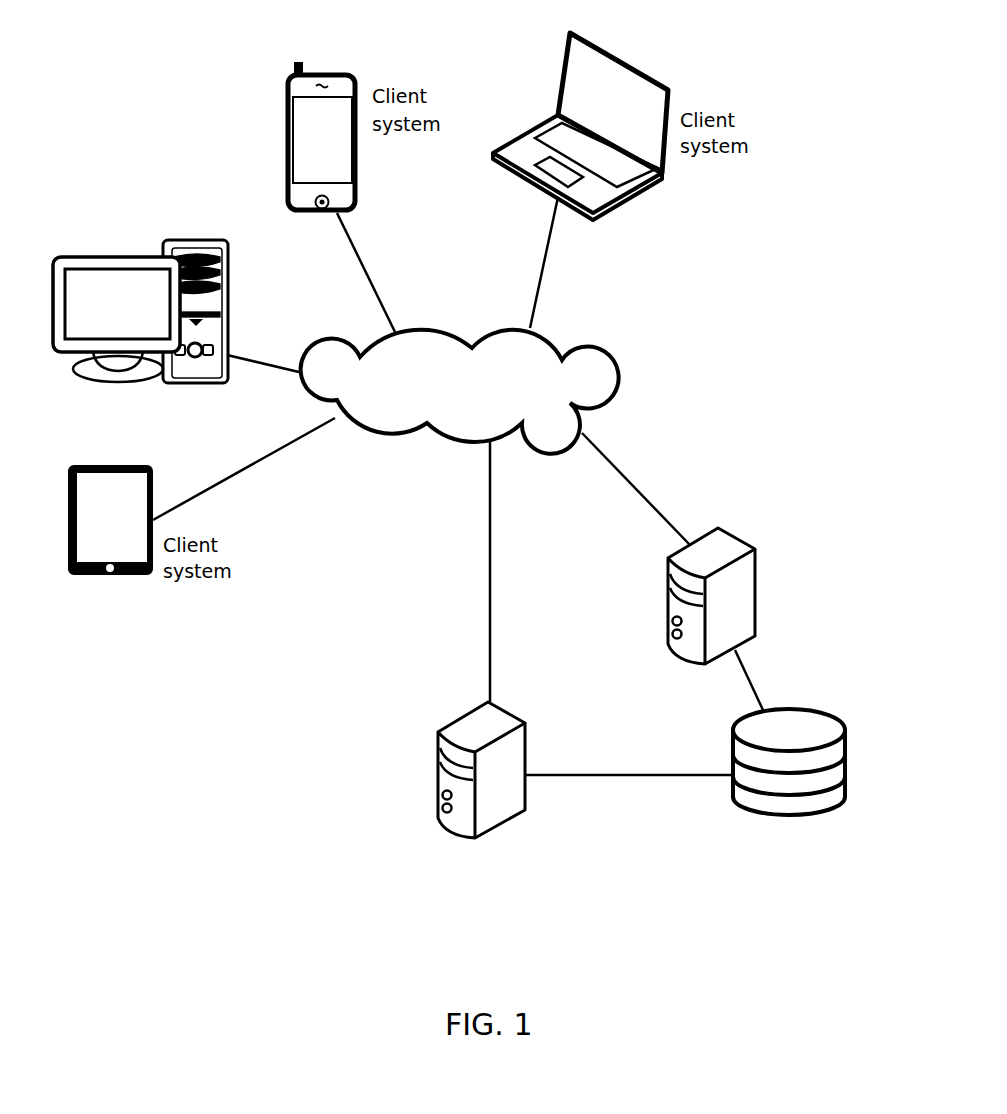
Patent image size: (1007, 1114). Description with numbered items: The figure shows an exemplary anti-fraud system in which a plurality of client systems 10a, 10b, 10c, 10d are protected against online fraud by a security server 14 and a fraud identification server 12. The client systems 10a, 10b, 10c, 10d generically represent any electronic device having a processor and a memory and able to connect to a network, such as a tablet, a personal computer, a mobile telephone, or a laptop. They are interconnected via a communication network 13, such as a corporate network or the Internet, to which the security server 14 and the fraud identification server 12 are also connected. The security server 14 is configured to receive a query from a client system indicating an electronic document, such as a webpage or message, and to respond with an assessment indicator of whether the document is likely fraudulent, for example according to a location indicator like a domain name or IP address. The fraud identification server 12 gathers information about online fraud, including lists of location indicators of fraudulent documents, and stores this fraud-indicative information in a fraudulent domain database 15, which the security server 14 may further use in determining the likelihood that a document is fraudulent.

The client system 10a is at (78, 576).
The client system 10b is at (126, 257).
The client system 10c is at (298, 62).
The client system 10d is at (640, 192).
The fraud identification server 12 is at (755, 551).
The communication network 13 is at (392, 434).
The security server 14 is at (465, 715).
The fraudulent domain database 15 is at (845, 723).